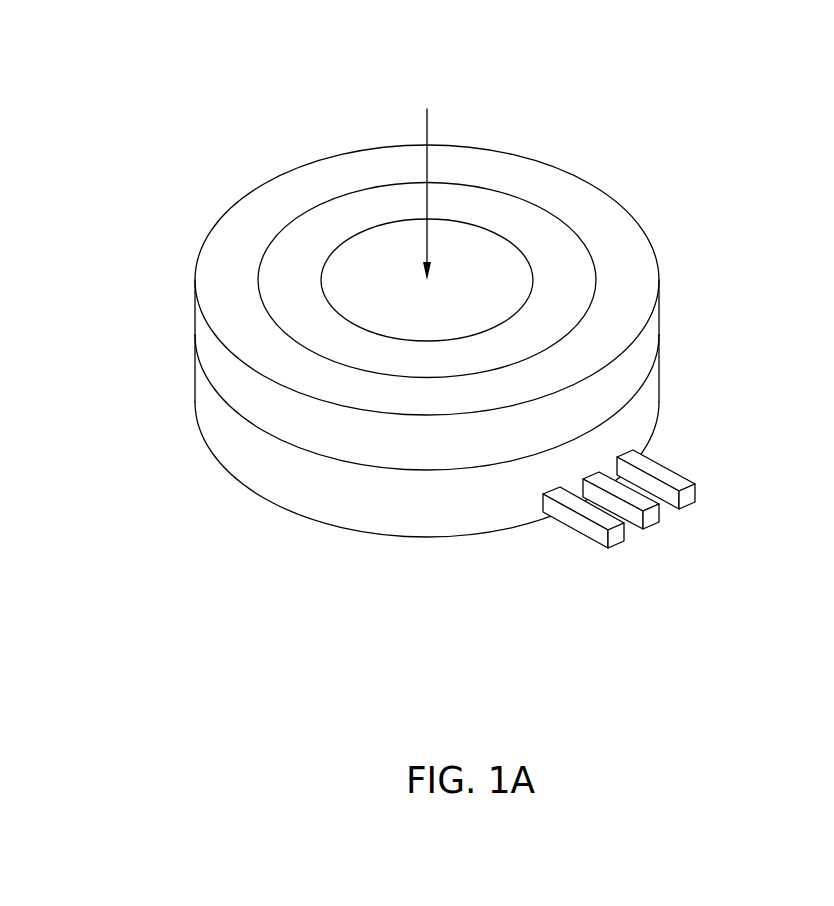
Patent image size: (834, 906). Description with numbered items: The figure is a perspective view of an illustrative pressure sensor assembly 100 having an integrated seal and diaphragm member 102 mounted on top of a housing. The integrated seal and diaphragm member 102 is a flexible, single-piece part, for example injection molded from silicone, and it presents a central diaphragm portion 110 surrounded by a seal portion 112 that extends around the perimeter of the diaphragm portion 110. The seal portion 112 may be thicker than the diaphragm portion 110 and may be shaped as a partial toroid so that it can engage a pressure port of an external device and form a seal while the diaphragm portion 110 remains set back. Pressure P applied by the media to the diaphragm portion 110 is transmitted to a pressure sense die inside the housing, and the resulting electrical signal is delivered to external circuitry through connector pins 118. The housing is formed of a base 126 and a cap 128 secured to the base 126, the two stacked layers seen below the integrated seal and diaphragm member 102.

The pressure sensor assembly 100 is at (456, 296).
The integrated seal and diaphragm member 102 is at (327, 223).
The diaphragm portion 110 is at (458, 236).
The seal portion 112 is at (542, 243).
The connector pins 118 is at (648, 516).
The base 126 is at (243, 465).
The cap 128 is at (410, 290).